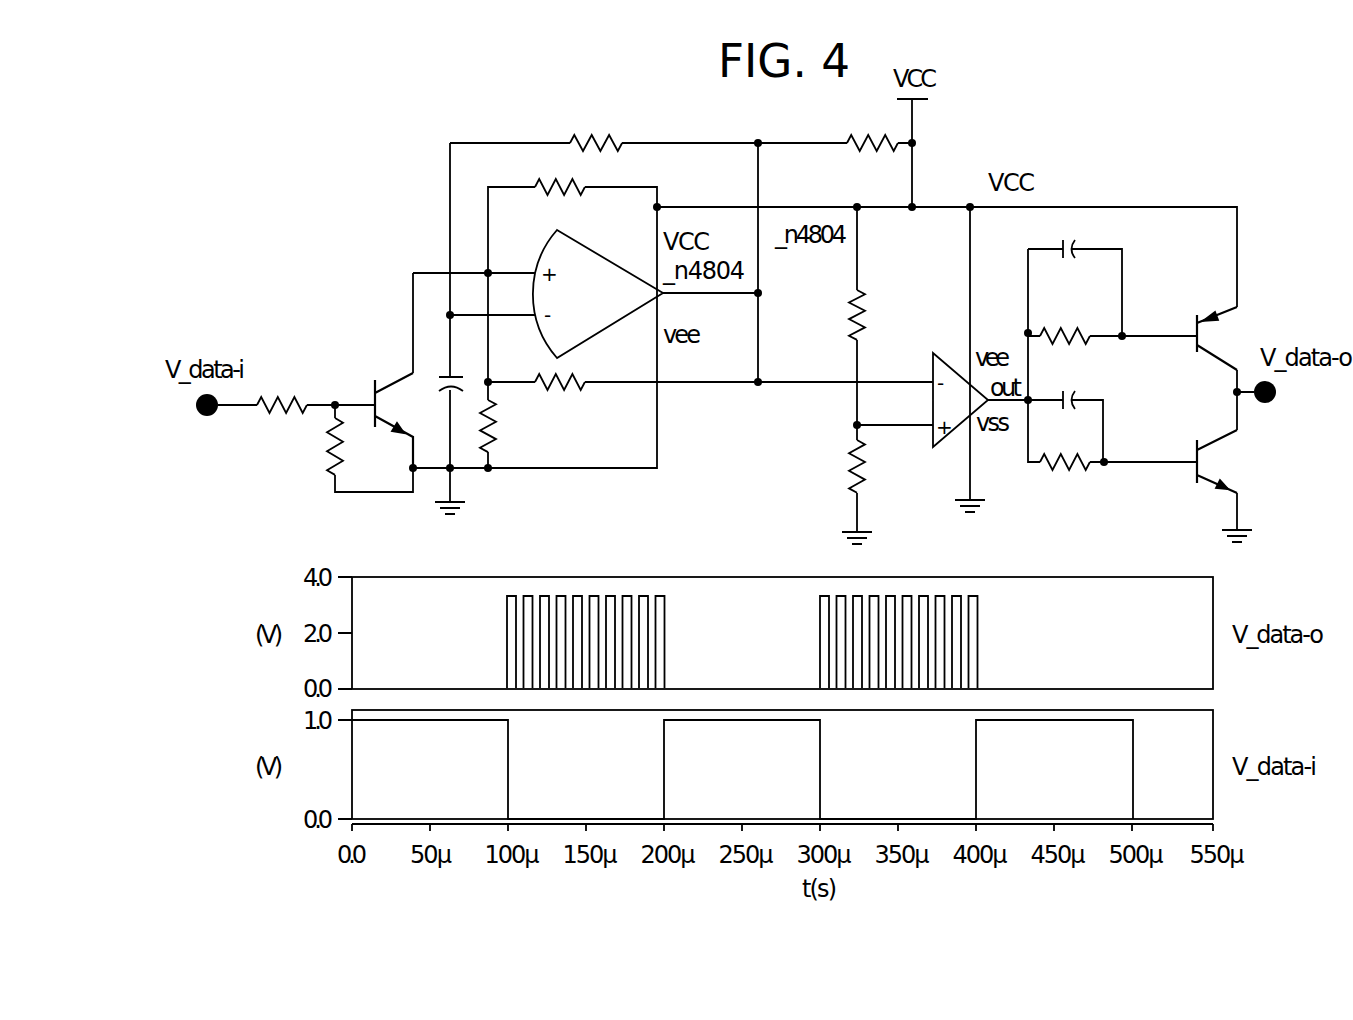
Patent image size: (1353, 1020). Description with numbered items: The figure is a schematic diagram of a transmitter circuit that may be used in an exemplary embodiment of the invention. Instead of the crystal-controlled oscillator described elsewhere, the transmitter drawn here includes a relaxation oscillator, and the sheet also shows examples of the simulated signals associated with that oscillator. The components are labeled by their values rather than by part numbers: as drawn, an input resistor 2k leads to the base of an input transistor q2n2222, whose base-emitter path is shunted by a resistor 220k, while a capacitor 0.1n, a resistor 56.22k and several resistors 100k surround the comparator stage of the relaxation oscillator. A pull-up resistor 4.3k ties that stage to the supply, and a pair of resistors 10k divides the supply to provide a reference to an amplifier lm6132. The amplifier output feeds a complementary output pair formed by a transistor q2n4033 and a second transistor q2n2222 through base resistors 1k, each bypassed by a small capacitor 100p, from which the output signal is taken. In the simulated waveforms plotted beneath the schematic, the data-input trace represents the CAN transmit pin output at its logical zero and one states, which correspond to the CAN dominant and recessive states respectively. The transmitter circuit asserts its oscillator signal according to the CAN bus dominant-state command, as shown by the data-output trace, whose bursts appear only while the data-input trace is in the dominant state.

The input resistor 2k is at (282, 420).
The feedback resistor 56.22k is at (601, 128).
The pull-up resistor 4.3k is at (869, 159).
The comparator resistors 100k is at (532, 315).
The base-emitter resistor 220k is at (364, 446).
The reference divider resistors 10k is at (855, 391).
The base resistors 1k is at (1065, 413).
The timing capacitor 0.1n is at (433, 397).
The speed-up capacitors 100p is at (1066, 322).
The NPN transistor q2n2222 is at (772, 423).
The PNP transistor q2n4033 is at (1188, 319).
The operational amplifier lm6132 is at (940, 418).